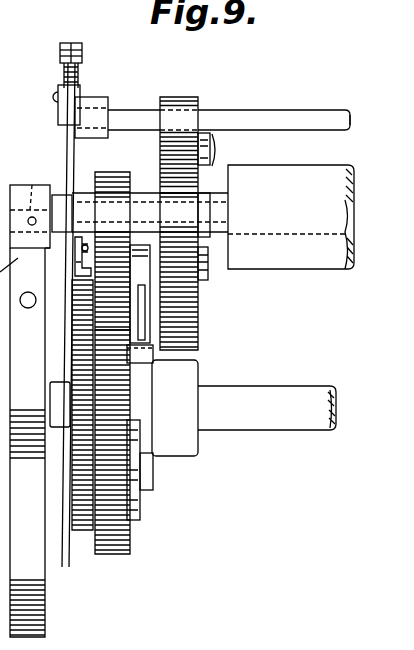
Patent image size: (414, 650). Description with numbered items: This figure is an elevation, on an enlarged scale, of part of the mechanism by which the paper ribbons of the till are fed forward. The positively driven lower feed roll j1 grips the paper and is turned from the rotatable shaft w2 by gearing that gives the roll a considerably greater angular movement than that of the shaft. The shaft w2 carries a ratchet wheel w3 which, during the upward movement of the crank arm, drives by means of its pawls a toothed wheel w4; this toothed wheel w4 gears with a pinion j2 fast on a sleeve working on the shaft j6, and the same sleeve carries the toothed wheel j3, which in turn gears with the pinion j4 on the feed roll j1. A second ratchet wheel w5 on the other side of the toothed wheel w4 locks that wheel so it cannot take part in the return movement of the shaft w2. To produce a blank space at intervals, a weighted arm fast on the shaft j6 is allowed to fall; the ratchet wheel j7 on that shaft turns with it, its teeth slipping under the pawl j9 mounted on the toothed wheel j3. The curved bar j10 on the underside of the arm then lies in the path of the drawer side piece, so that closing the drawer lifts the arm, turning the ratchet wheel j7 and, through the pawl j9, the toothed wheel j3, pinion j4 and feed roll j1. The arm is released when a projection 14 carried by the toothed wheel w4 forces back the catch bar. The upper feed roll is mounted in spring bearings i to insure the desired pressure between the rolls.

The spring bearings i is at (78, 77).
The feed roll j1 is at (297, 262).
The pinion j2 is at (107, 172).
The toothed wheel j3 is at (190, 97).
The pinion j4 is at (161, 182).
The shaft j6 is at (28, 201).
The ratchet wheel j7 is at (208, 268).
The pawl j9 is at (212, 152).
The curved bar j10 is at (30, 623).
The projection 14 is at (89, 247).
The shaft w2 is at (278, 432).
The ratchet wheel w3 is at (140, 387).
The toothed wheel w4 is at (128, 548).
The ratchet wheel w5 is at (83, 531).